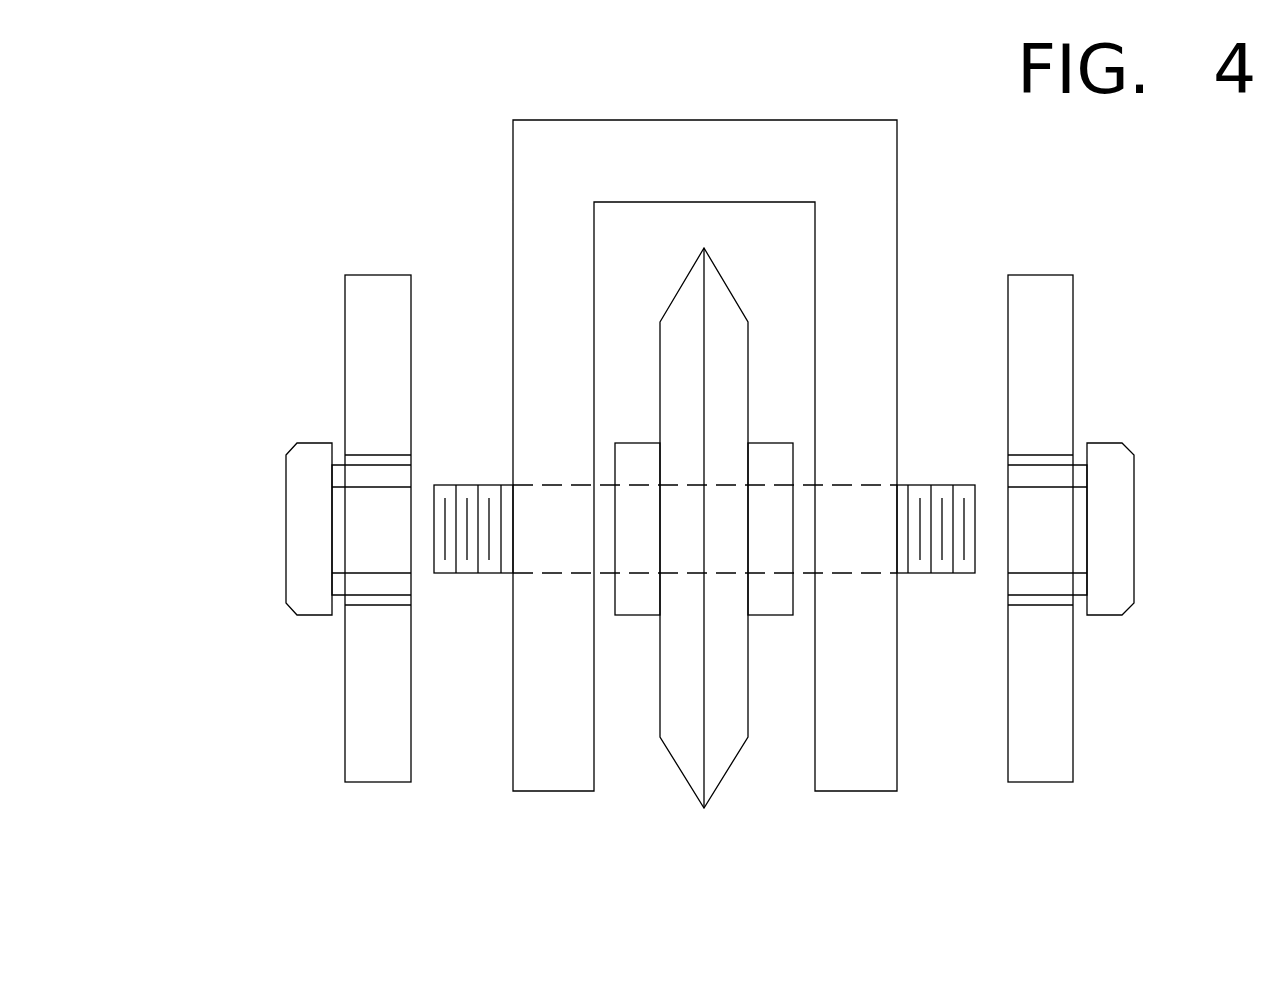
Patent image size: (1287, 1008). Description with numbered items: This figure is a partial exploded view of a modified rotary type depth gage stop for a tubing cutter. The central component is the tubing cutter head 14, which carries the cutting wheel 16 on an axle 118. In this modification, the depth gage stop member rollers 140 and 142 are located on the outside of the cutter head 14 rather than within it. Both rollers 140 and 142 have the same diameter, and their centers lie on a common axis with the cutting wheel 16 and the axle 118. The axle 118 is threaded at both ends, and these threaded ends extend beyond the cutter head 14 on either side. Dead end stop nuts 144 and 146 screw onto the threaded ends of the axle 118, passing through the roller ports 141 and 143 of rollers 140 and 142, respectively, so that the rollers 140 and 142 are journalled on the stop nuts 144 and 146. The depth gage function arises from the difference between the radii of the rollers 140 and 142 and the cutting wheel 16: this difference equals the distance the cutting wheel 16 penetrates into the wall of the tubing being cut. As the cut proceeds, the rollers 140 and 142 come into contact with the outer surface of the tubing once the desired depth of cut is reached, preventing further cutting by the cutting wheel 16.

The tubing cutter head 14 is at (758, 455).
The cutting wheel 16 is at (732, 564).
The axle 118 is at (857, 486).
The depth gage stop member roller 140 is at (320, 483).
The roller port 141 is at (329, 475).
The depth gage stop member roller 142 is at (1112, 486).
The roller port 143 is at (1108, 481).
The dead end stop nut 144 is at (246, 575).
The dead end stop nut 146 is at (1177, 579).